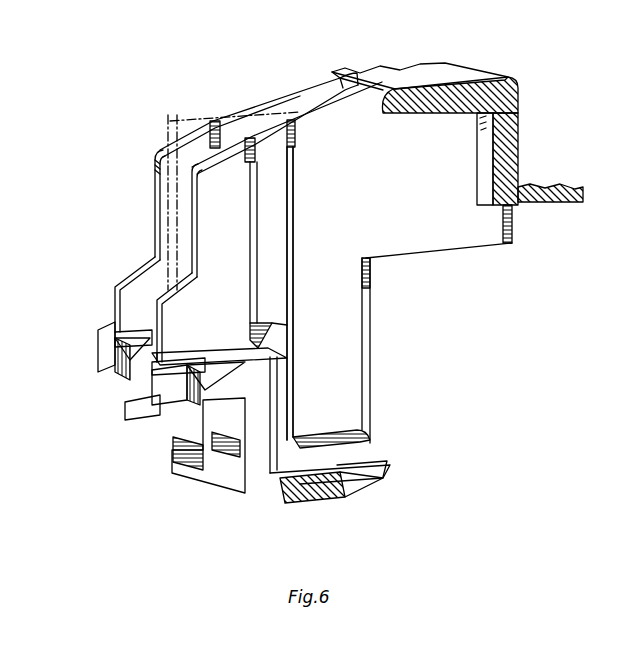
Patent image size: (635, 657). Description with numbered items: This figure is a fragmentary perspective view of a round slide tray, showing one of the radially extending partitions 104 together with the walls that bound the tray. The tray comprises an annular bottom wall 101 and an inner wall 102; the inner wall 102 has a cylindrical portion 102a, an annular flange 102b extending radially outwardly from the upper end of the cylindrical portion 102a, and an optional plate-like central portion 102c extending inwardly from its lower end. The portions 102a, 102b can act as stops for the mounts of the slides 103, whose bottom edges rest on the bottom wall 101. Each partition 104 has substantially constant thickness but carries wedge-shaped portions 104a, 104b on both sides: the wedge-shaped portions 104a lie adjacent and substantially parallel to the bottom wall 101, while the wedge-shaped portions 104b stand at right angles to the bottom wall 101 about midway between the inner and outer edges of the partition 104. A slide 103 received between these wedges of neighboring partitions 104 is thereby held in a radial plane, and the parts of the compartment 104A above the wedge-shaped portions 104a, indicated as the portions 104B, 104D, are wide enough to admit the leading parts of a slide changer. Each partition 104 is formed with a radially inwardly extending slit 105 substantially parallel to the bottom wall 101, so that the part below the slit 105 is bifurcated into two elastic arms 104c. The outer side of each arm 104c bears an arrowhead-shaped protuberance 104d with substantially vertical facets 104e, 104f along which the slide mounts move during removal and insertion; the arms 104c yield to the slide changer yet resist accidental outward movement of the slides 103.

The annular bottom wall 101 is at (363, 477).
The inner wall 102 is at (465, 139).
The cylindrical portion 102a is at (505, 148).
The annular flange 102b is at (422, 96).
The plate-like central portion 102c is at (548, 200).
The slide 103 is at (172, 119).
The partition 104 is at (318, 100).
The compartment 104A is at (187, 158).
The portion of compartment 104B is at (440, 258).
The portion of compartment 104D is at (233, 323).
The wedge-shaped portion 104a is at (312, 440).
The wedge-shaped portion 104b is at (258, 113).
The elastic arm 104c is at (98, 337).
The arrowhead-shaped protuberance 104d is at (163, 393).
The facet 104e is at (183, 420).
The facet 104f is at (113, 367).
The slit 105 is at (110, 326).